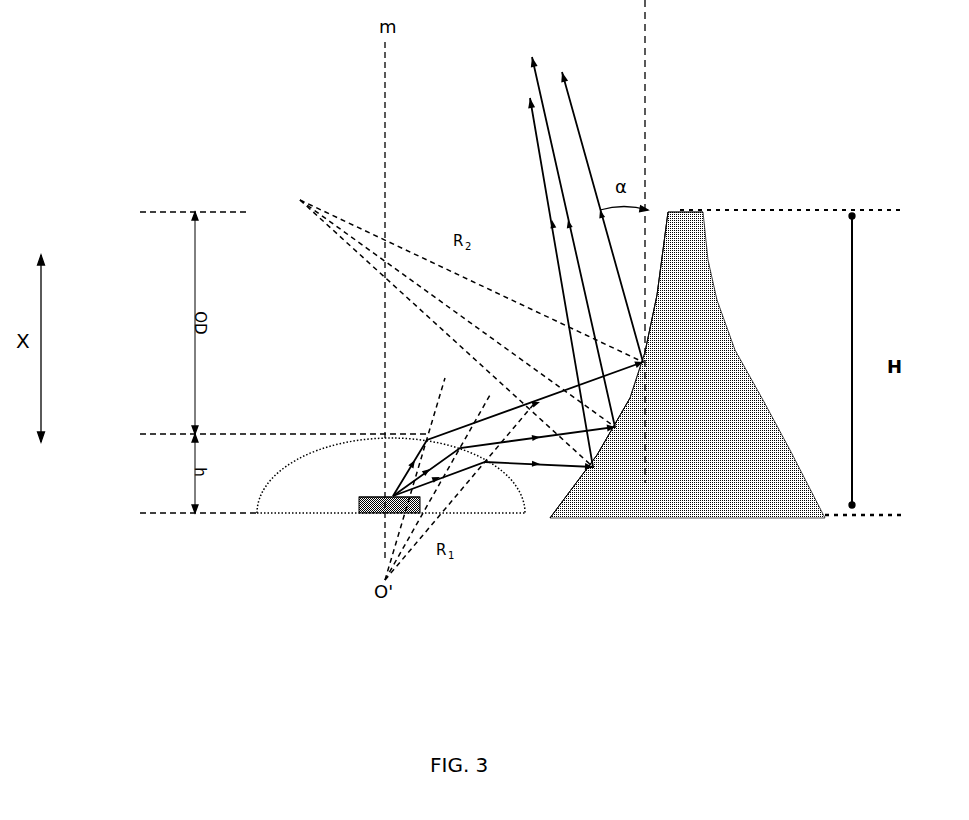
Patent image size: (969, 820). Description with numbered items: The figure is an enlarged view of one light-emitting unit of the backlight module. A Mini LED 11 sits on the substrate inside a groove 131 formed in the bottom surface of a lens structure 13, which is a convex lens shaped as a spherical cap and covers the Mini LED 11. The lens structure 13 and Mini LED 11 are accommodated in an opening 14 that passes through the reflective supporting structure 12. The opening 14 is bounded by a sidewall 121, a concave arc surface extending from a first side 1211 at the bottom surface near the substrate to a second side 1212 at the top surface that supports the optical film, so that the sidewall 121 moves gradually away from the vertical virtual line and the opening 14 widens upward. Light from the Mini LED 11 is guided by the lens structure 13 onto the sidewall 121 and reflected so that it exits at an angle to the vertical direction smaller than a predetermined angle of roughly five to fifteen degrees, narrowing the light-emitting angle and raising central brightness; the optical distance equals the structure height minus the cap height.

The Mini LED 11 is at (357, 517).
The reflective supporting structure 12 is at (687, 487).
The sidewall 121 is at (632, 395).
The first side 1211 is at (545, 520).
The second side 1212 is at (668, 212).
The lens structure 13 is at (303, 456).
The groove 131 is at (377, 497).
The opening 14 is at (353, 190).